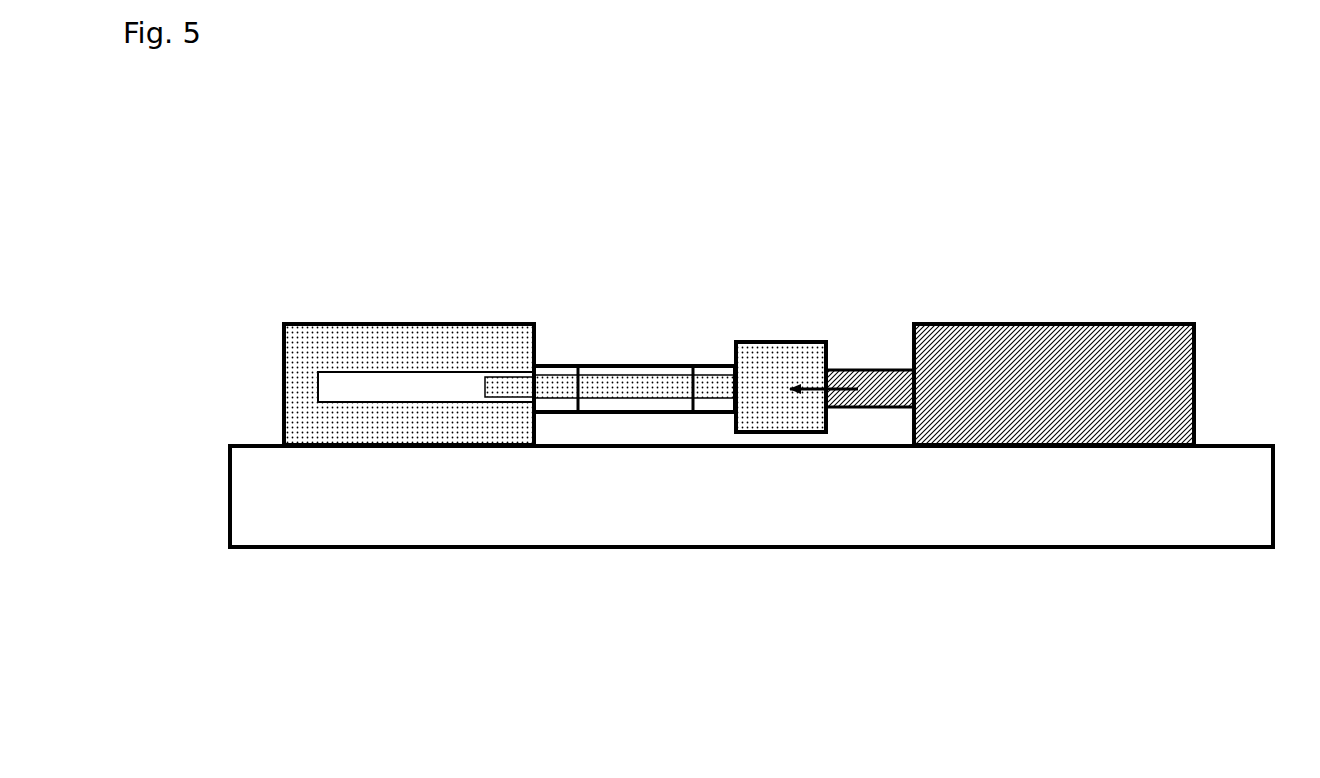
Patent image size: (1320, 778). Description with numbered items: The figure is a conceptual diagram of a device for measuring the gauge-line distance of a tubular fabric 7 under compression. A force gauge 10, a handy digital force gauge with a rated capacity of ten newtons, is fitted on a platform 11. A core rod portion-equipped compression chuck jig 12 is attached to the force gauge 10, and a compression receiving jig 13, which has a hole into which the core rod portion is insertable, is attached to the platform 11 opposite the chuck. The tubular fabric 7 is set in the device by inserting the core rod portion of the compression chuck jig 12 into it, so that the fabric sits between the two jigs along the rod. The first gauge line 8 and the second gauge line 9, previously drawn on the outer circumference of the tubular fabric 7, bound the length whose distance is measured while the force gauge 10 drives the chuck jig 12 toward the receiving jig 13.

The tubular fabric 7 is at (636, 356).
The first gauge line 8 is at (576, 355).
The second gauge line 9 is at (700, 355).
The force gauge 10 is at (1081, 313).
The platform 11 is at (760, 556).
The core rod portion-equipped compression chuck jig 12 is at (783, 332).
The compression receiving jig 13 is at (425, 312).